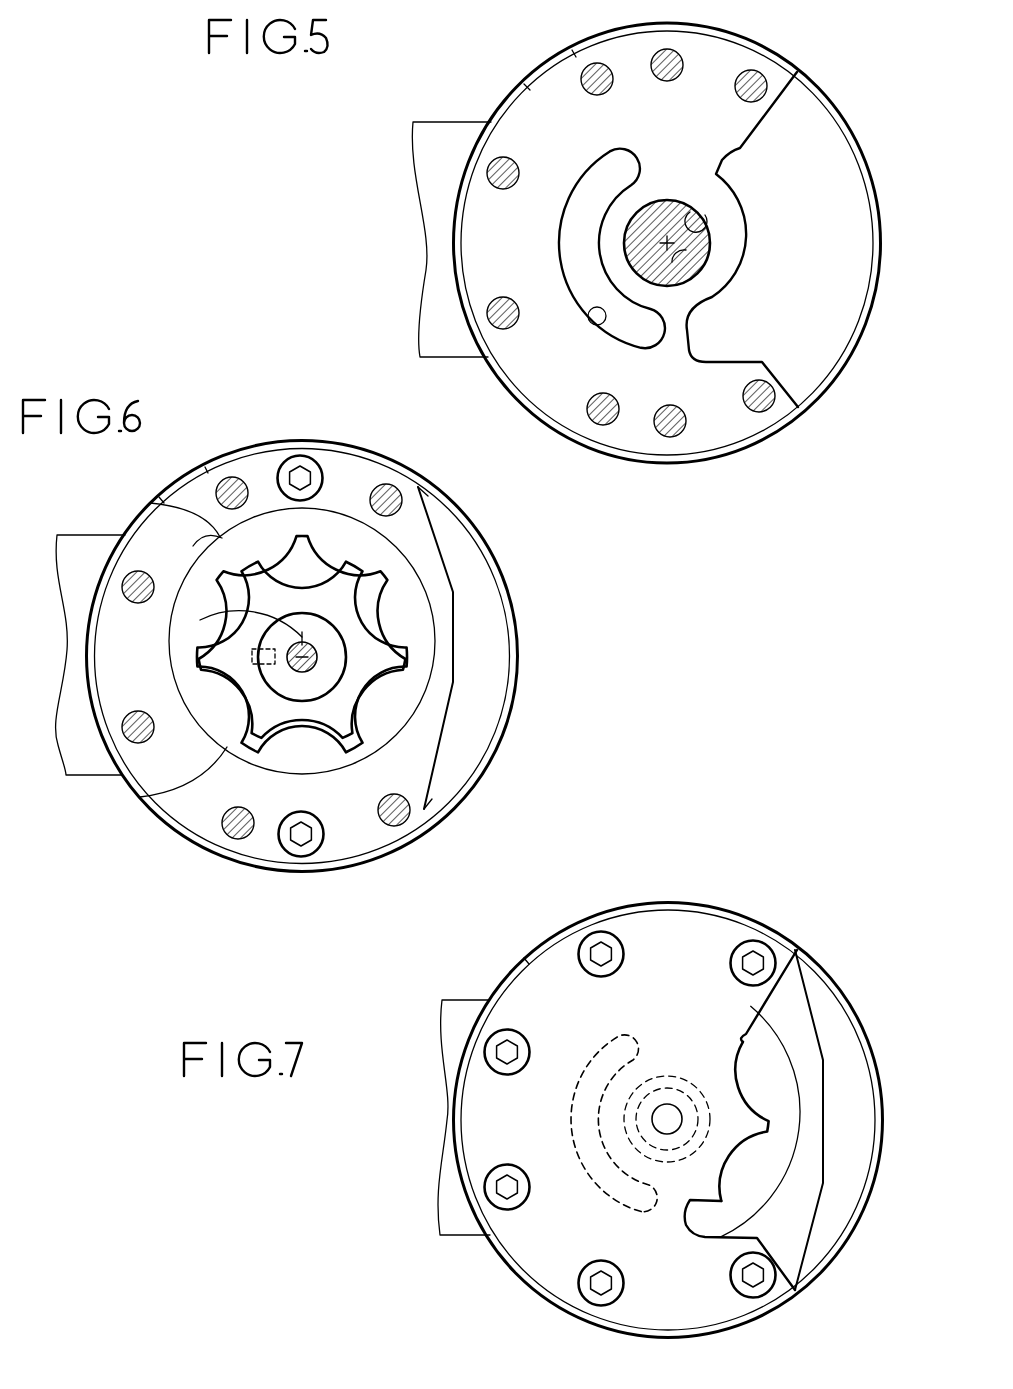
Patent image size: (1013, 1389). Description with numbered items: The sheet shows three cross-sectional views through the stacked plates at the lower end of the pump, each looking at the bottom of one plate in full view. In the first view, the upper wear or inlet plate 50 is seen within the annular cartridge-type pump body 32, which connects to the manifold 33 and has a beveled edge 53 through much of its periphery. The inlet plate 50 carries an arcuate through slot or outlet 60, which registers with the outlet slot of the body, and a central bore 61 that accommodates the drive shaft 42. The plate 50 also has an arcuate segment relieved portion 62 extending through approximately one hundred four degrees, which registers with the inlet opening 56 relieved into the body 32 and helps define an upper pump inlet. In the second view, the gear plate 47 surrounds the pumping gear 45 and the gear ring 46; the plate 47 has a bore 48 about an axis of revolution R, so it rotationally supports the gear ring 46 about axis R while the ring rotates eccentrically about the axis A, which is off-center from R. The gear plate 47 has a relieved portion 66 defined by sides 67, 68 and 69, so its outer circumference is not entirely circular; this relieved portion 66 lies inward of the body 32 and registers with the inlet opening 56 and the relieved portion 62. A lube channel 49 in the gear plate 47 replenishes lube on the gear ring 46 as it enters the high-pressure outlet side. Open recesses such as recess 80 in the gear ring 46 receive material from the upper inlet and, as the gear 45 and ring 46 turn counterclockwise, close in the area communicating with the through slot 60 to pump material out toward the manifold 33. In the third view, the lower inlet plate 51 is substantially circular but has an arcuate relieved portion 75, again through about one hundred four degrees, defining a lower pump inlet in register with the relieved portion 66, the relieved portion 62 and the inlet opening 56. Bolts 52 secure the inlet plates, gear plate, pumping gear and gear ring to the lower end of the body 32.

In FIG. 5, the pump body 32 is at (826, 397).
In FIG. 6, the pump body 32 is at (190, 838).
In FIG. 7, the pump body 32 is at (625, 903).
In FIG. 5, the manifold 33 is at (413, 190).
In FIG. 6, the manifold 33 is at (57, 561).
In FIG. 7, the manifold 33 is at (442, 1020).
In FIG. 5, the drive shaft 42 is at (672, 222).
In FIG. 6, the drive shaft 42 is at (302, 645).
In FIG. 6, the pumping gear 45 is at (375, 665).
In FIG. 7, the pumping gear 45 is at (737, 1033).
In FIG. 6, the gear ring 46 is at (386, 726).
In FIG. 7, the gear ring 46 is at (767, 1037).
In FIG. 6, the gear plate 47 is at (187, 800).
In FIG. 7, the gear plate 47 is at (787, 988).
In FIG. 6, the bore 48 is at (140, 797).
In FIG. 6, the lube channel 49 is at (150, 503).
In FIG. 5, the upper inlet plate 50 is at (722, 70).
In FIG. 6, the upper inlet plate 50 is at (432, 499).
In FIG. 7, the lower inlet plate 51 is at (547, 1240).
In FIG. 7, the bolts 52 is at (618, 945).
In FIG. 5, the beveled edge 53 is at (760, 435).
In FIG. 6, the beveled edge 53 is at (228, 852).
In FIG. 7, the beveled edge 53 is at (585, 918).
In FIG. 5, the inlet opening 56 is at (830, 273).
In FIG. 6, the inlet opening 56 is at (484, 642).
In FIG. 7, the inlet opening 56 is at (845, 1121).
In FIG. 5, the arcuate through slot 60 is at (604, 326).
In FIG. 6, the arcuate through slot 60 is at (262, 573).
In FIG. 7, the arcuate through slot 60 is at (575, 1127).
In FIG. 5, the central bore 61 is at (701, 210).
In FIG. 5, the arcuate segment relieved portion 62 is at (780, 95).
In FIG. 6, the relieved portion 66 is at (459, 744).
In FIG. 6, the side 67 is at (434, 781).
In FIG. 6, the side 68 is at (456, 684).
In FIG. 6, the side 69 is at (443, 561).
In FIG. 7, the arcuate relieved portion 75 is at (770, 1252).
In FIG. 6, the recess 80 is at (370, 613).
In FIG. 7, the recess 80 is at (738, 1080).
In FIG. 5, the axis of rotation A is at (682, 260).
In FIG. 6, the axis of rotation A is at (302, 667).
In FIG. 6, the axis of rotation R is at (208, 621).